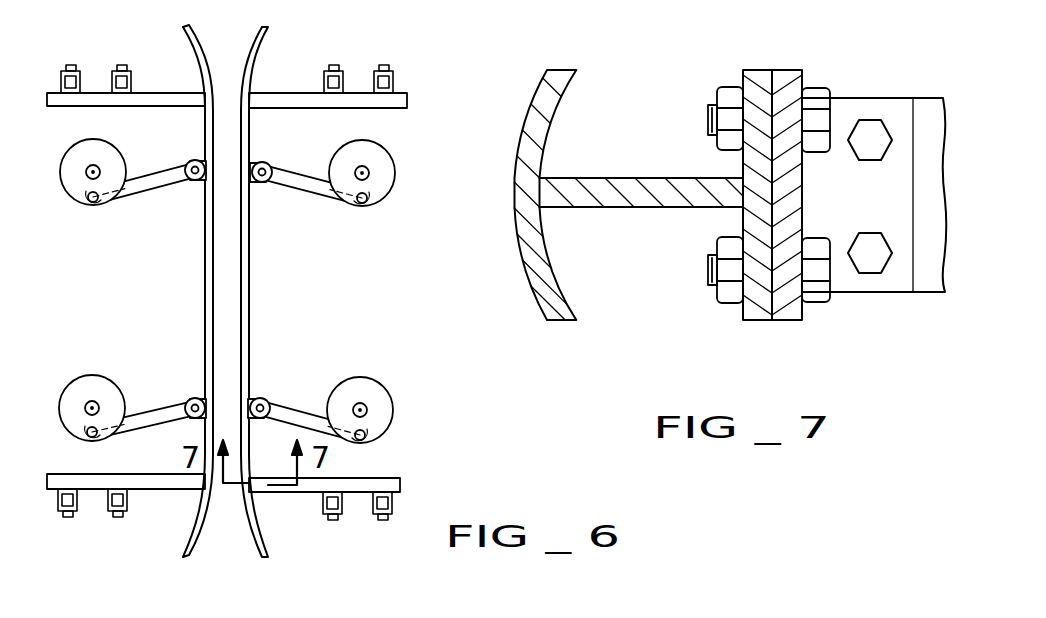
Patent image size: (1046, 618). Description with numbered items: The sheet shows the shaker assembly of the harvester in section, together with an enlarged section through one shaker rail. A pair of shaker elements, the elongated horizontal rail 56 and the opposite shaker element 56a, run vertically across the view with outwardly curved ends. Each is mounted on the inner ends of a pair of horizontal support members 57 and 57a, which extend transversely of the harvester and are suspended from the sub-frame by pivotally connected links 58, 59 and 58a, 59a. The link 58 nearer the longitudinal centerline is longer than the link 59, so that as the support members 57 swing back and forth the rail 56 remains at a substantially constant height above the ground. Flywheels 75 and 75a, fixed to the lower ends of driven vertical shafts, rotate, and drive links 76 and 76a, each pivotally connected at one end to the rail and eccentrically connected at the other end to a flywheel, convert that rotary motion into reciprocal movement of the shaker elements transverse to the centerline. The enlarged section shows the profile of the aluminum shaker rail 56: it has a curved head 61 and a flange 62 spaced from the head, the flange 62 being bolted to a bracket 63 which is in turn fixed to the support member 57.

In FIG. 6, the shaker rail 56 is at (246, 295).
In FIG. 7, the shaker rail 56 is at (633, 178).
In FIG. 6, the shaker element 56a is at (207, 283).
In FIG. 6, the horizontal support member 57 is at (275, 92).
In FIG. 7, the horizontal support member 57 is at (925, 280).
In FIG. 6, the horizontal support member 57a is at (173, 99).
In FIG. 6, the link 58 is at (342, 72).
In FIG. 6, the link 58a is at (120, 66).
In FIG. 6, the link 59 is at (393, 73).
In FIG. 6, the link 59a is at (66, 67).
In FIG. 7, the curved head 61 is at (528, 132).
In FIG. 7, the flange 62 is at (742, 313).
In FIG. 7, the bracket 63 is at (802, 313).
In FIG. 6, the flywheel 75 is at (382, 177).
In FIG. 6, the flywheel 75a is at (70, 173).
In FIG. 6, the drive link 76 is at (307, 185).
In FIG. 6, the drive link 76a is at (152, 182).